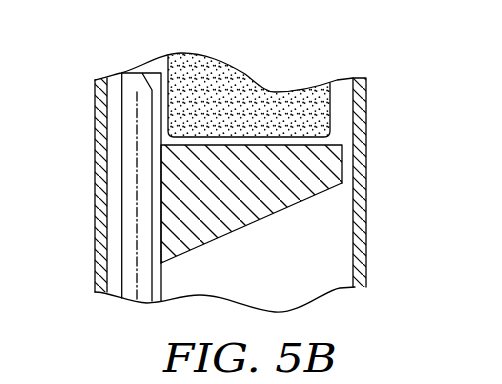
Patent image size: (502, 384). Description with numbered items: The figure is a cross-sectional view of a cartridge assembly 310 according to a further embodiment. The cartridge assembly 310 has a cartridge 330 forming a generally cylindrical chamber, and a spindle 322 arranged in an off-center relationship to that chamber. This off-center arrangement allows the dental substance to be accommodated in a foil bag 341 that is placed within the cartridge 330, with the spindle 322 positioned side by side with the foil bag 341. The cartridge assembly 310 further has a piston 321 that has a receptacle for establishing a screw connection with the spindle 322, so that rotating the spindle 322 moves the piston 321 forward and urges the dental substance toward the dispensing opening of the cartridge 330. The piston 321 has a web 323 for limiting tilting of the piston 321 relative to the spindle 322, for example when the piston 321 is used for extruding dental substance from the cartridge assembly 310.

The cartridge assembly 310 is at (188, 182).
The cartridge 330 is at (100, 127).
The spindle 322 is at (130, 292).
The foil bag 341 is at (300, 108).
The piston 321 is at (290, 205).
The web 323 is at (282, 198).